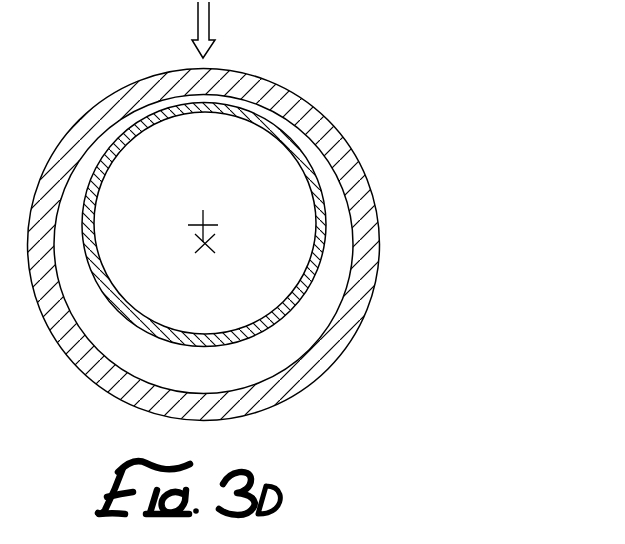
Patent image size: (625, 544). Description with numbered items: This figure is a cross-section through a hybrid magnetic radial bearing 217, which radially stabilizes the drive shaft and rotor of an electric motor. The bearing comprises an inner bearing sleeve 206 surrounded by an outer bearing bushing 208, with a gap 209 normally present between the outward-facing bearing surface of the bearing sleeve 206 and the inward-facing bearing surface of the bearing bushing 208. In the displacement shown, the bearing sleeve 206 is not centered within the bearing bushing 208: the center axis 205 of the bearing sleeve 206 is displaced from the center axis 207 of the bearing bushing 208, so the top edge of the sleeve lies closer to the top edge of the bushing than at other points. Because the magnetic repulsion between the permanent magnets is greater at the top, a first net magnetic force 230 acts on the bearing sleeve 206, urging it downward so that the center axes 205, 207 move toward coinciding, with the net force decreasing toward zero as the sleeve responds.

The center axis 205 is at (205, 222).
The bearing sleeve 206 is at (314, 272).
The center axis 207 is at (201, 245).
The bearing bushing 208 is at (378, 211).
The gap 209 is at (212, 368).
The hybrid magnetic radial bearing 217 is at (389, 82).
The first net magnetic force 230 is at (197, 22).